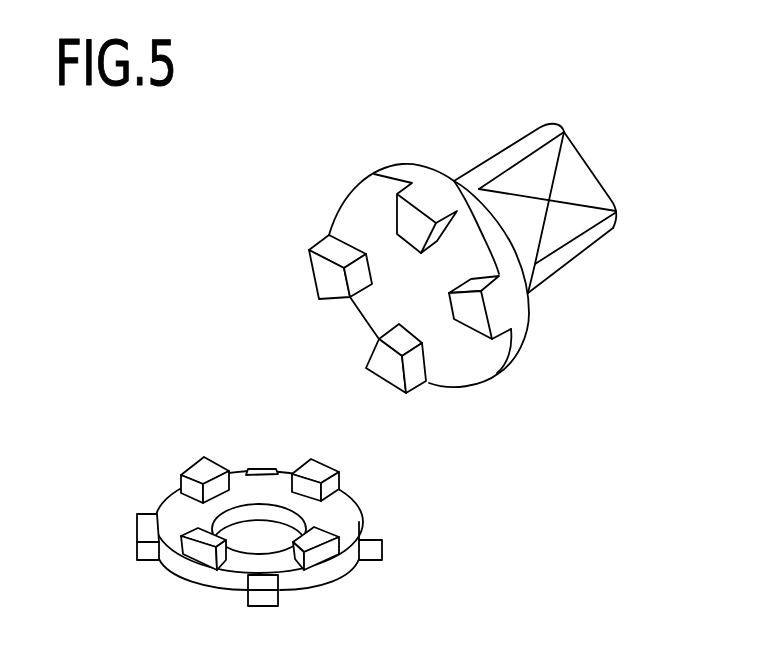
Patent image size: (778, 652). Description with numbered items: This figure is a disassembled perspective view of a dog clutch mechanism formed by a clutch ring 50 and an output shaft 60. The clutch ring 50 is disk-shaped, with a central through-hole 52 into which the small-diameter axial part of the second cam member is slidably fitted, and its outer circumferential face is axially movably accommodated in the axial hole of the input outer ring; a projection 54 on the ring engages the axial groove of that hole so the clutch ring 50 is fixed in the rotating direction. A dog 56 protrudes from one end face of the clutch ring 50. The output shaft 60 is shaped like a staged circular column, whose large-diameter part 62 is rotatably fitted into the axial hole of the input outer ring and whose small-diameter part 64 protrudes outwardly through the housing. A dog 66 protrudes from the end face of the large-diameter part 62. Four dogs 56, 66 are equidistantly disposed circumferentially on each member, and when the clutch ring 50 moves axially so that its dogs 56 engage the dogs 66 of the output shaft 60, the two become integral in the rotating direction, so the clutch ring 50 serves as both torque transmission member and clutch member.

The clutch ring 50 is at (294, 480).
The through-hole 52 is at (255, 498).
The projection 54 is at (364, 521).
The dog 56 is at (303, 452).
The output shaft 60 is at (402, 257).
The large-diameter part 62 is at (392, 168).
The small-diameter part 64 is at (507, 152).
The dog 66 is at (392, 370).